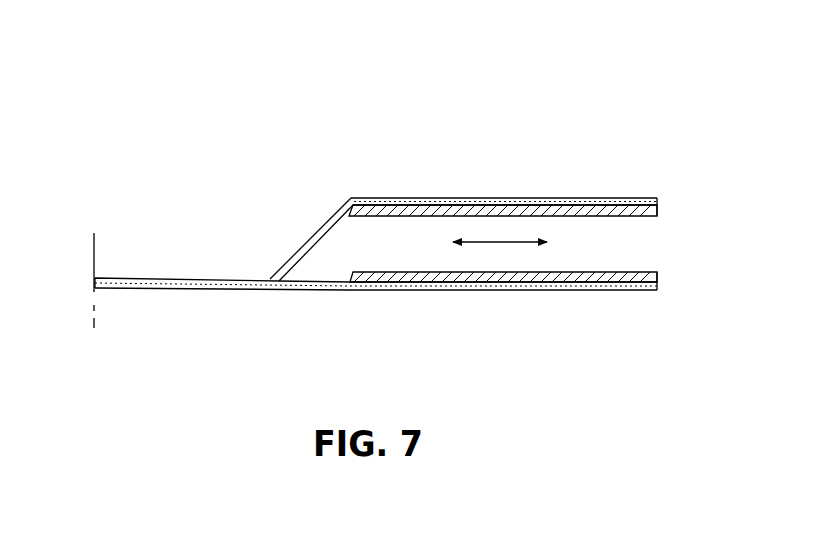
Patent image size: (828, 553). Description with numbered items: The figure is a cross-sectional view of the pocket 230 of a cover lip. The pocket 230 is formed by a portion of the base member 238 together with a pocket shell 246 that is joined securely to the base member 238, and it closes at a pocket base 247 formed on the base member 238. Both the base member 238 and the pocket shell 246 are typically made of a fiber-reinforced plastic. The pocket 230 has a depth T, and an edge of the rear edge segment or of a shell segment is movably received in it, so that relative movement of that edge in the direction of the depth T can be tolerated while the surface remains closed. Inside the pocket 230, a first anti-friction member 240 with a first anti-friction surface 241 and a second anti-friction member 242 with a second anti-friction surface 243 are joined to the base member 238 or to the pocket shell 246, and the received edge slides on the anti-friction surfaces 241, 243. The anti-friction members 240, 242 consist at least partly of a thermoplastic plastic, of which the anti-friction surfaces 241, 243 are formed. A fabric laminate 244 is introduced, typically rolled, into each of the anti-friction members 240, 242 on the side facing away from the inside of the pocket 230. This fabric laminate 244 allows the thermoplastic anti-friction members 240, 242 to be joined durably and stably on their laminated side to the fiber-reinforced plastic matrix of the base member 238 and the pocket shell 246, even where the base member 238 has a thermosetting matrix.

The pocket 230 is at (157, 101).
The base member 238 is at (463, 293).
The first anti-friction member 240 is at (416, 199).
The first anti-friction surface 241 is at (636, 222).
The second anti-friction member 242 is at (611, 291).
The second anti-friction surface 243 is at (636, 267).
The fabric laminate 244 is at (573, 197).
The pocket shell 246 is at (472, 198).
The pocket base 247 is at (333, 231).
The depth T is at (497, 243).